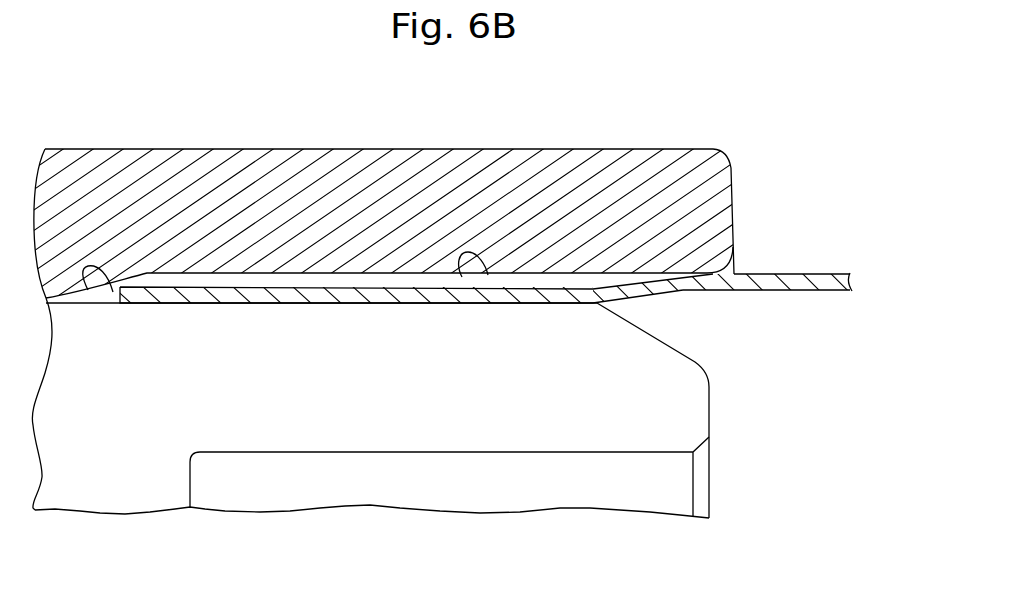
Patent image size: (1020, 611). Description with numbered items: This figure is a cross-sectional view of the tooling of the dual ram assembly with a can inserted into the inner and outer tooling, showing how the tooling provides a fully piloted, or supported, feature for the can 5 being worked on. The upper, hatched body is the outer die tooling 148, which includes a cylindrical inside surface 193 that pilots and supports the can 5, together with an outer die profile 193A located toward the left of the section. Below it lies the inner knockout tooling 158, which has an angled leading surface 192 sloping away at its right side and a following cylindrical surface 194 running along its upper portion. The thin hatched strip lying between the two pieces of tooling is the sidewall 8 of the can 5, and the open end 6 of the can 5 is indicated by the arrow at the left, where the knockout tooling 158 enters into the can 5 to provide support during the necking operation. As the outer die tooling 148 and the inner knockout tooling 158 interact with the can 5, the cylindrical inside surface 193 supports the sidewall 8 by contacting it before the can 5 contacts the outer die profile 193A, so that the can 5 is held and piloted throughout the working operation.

The open end 6 is at (193, 282).
The outer die tooling 148 is at (350, 148).
The sidewall 8 is at (808, 273).
The article 5 is at (858, 277).
The outer die profile 193A is at (88, 290).
The following cylindrical surface 194 is at (327, 304).
The cylindrical inside surface 193 is at (462, 277).
The angled leading surface 192 is at (650, 337).
The inner knockout tooling 158 is at (122, 423).